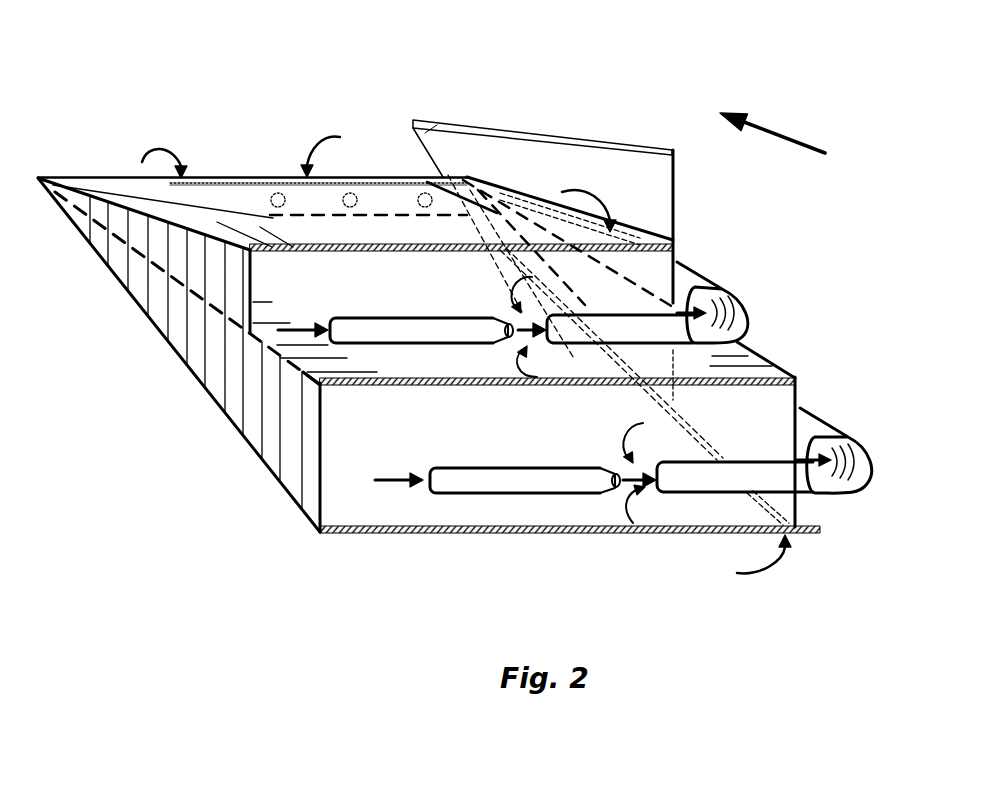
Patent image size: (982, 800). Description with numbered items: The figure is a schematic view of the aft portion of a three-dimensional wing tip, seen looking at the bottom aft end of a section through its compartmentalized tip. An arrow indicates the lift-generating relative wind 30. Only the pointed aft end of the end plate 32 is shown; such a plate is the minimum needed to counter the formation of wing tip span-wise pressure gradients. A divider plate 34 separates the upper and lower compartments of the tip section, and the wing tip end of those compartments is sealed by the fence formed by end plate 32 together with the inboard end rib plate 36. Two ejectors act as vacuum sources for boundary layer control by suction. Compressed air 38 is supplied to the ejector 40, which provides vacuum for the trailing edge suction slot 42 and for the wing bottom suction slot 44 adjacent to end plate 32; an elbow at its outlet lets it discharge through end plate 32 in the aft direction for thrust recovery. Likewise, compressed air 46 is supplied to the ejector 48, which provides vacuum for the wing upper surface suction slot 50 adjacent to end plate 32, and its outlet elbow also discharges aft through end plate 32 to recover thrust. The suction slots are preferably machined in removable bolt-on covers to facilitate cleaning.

The relative wind 30 is at (746, 126).
The end plate 32 is at (448, 120).
The divider plate 34 is at (255, 452).
The inboard end rib plate 36 is at (195, 353).
The compressed air 38 is at (295, 322).
The ejector 40 is at (527, 363).
The trailing edge suction slot 42 is at (250, 177).
The wing bottom suction slot 44 is at (582, 228).
The compressed air 46 is at (397, 486).
The ejector 48 is at (613, 497).
The wing upper surface suction slot 50 is at (755, 510).